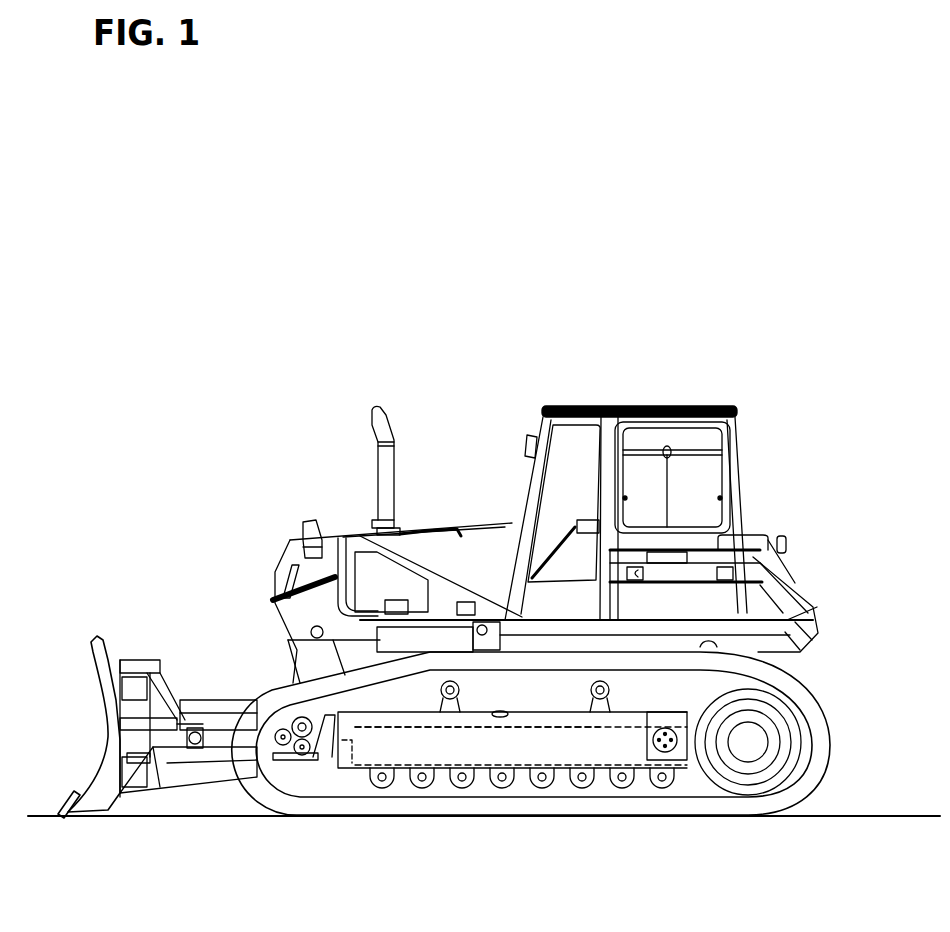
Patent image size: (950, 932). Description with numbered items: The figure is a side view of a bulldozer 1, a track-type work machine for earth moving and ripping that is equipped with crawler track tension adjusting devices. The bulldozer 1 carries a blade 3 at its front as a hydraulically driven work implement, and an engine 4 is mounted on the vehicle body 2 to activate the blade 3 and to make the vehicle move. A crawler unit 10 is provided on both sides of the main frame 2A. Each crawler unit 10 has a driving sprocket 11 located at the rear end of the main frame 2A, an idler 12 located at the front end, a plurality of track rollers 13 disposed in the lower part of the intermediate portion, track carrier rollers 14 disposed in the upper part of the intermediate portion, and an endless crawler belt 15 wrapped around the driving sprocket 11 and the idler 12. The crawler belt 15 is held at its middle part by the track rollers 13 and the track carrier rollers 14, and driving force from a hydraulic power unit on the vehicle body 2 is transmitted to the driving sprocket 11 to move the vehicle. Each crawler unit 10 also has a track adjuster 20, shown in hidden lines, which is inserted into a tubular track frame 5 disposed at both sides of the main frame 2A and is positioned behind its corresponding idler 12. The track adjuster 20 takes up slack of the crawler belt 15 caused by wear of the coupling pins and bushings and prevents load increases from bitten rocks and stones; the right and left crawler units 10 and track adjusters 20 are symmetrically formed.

The bulldozer 1 is at (698, 380).
The vehicle body 2 is at (552, 544).
The main frame 2A is at (748, 660).
The blade 3 is at (100, 748).
The engine 4 is at (405, 580).
The track frame 5 is at (550, 766).
The crawler unit 10 is at (729, 819).
The driving sprocket 11 is at (778, 773).
The idler 12 is at (292, 797).
The track rollers 13 is at (650, 770).
The track carrier rollers 14 is at (447, 700).
The crawler belt 15 is at (815, 738).
The track adjuster 20 is at (585, 727).